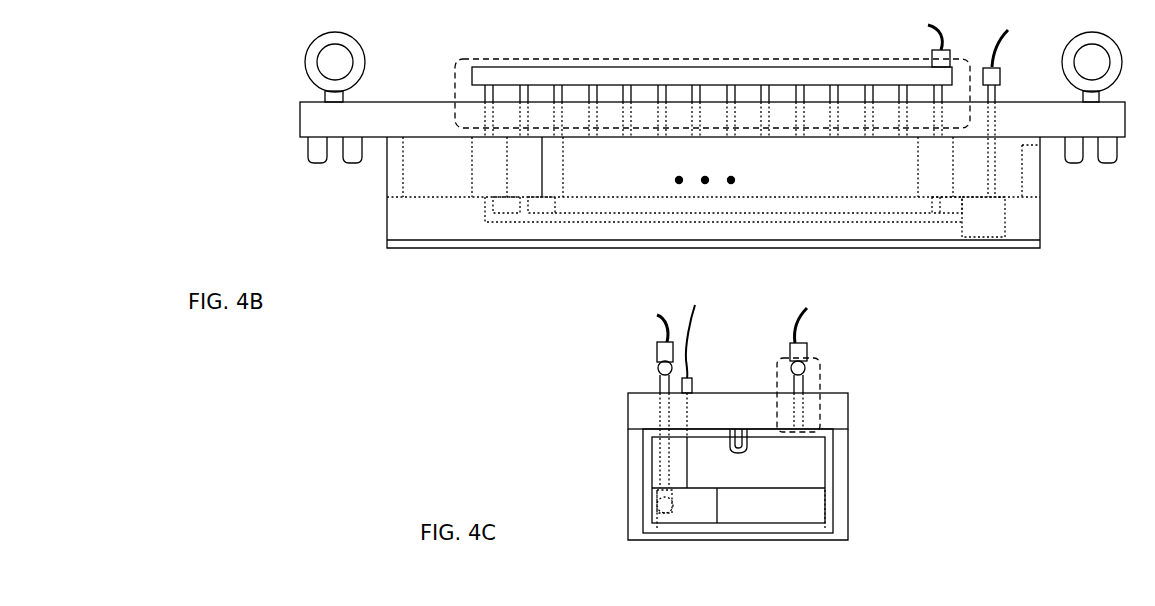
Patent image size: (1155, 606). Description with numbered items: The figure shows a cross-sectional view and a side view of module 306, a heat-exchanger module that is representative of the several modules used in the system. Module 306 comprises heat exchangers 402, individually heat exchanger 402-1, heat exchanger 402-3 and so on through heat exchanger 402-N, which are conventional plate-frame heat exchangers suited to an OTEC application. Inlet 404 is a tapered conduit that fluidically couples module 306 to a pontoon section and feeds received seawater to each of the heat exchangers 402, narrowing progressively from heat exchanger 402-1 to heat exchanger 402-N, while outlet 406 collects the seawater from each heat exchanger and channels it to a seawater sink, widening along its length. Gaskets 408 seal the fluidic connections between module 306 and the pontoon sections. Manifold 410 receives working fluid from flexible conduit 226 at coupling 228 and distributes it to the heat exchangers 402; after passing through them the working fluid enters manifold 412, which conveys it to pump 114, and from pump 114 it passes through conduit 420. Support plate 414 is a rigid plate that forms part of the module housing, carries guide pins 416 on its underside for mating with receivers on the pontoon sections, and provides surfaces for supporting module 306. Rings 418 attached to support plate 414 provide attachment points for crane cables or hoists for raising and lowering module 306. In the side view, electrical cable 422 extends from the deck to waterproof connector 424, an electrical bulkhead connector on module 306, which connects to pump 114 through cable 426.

In FIG. 4B, the module 306 is at (233, 92).
In FIG. 4B, the pump 114 is at (983, 217).
In FIG. 4C, the pump 114 is at (700, 510).
In FIG. 4B, the flexible conduit 226 is at (940, 48).
In FIG. 4C, the flexible conduit 226 is at (660, 322).
In FIG. 4B, the coupling 228 is at (990, 68).
In FIG. 4C, the coupling 228 is at (657, 348).
In FIG. 4C, the heat exchangers 402 is at (827, 480).
In FIG. 4B, the heat exchanger 402-1 is at (490, 168).
In FIG. 4B, the heat exchanger 402-3 is at (558, 162).
In FIG. 4B, the heat exchanger 402-N is at (937, 162).
In FIG. 4B, the inlet 404 is at (437, 167).
In FIG. 4C, the inlet 404 is at (827, 480).
In FIG. 4B, the outlet 406 is at (1008, 180).
In FIG. 4C, the outlet 406 is at (783, 472).
In FIG. 4B, the gaskets 408 is at (395, 175).
In FIG. 4C, the gaskets 408 is at (828, 472).
In FIG. 4B, the manifold 410 is at (455, 85).
In FIG. 4C, the manifold 410 is at (822, 403).
In FIG. 4B, the manifold 412 is at (877, 223).
In FIG. 4C, the manifold 412 is at (663, 505).
In FIG. 4B, the support plate 414 is at (712, 119).
In FIG. 4C, the support plate 414 is at (738, 411).
In FIG. 4B, the guide pins 416 is at (1154, 197).
In FIG. 4C, the guide pins 416 is at (740, 443).
In FIG. 4B, the rings 418 is at (1154, 24).
In FIG. 4B, the conduit 420 is at (992, 125).
In FIG. 4C, the conduit 420 is at (660, 475).
In FIG. 4C, the electrical cable 422 is at (690, 333).
In FIG. 4C, the waterproof connector 424 is at (693, 387).
In FIG. 4C, the cable 426 is at (687, 413).